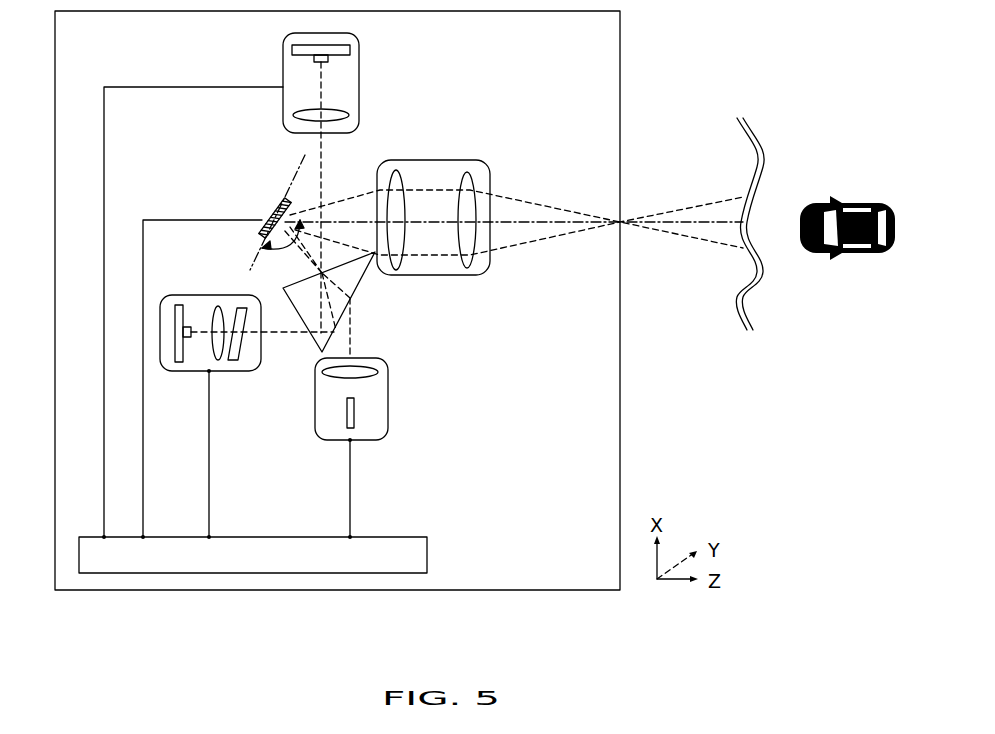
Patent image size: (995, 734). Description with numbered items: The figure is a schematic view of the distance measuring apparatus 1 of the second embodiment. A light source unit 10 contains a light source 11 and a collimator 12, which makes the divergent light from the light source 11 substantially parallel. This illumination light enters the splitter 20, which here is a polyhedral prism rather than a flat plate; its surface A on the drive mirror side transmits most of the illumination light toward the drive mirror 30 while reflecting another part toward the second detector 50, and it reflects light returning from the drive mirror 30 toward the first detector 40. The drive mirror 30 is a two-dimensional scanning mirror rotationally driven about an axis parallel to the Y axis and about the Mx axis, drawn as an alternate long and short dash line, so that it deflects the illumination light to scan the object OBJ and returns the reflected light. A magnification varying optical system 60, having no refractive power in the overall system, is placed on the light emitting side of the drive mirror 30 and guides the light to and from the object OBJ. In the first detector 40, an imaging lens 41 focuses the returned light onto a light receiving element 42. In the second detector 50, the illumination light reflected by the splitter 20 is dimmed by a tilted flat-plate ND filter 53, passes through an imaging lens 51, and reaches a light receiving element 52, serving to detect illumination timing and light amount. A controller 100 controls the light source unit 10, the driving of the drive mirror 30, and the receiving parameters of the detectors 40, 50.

The distance measuring apparatus 1 is at (55, 94).
The light source unit 10 is at (344, 427).
The light source 11 is at (354, 420).
The collimator 12 is at (323, 378).
The splitter 20 is at (353, 273).
The drive mirror 30 is at (280, 201).
The first detector 40 is at (327, 77).
The imaging lens 41 is at (314, 113).
The light receiving element 42 is at (293, 52).
The second detector 50 is at (243, 337).
The imaging lens 51 is at (220, 322).
The light receiving element 52 is at (176, 328).
The ND filter 53 is at (243, 347).
The magnification varying optical system 60 is at (455, 160).
The controller 100 is at (92, 535).
The Mx axis Mx is at (288, 190).
The surface A is at (283, 290).
The object OBJ is at (836, 200).